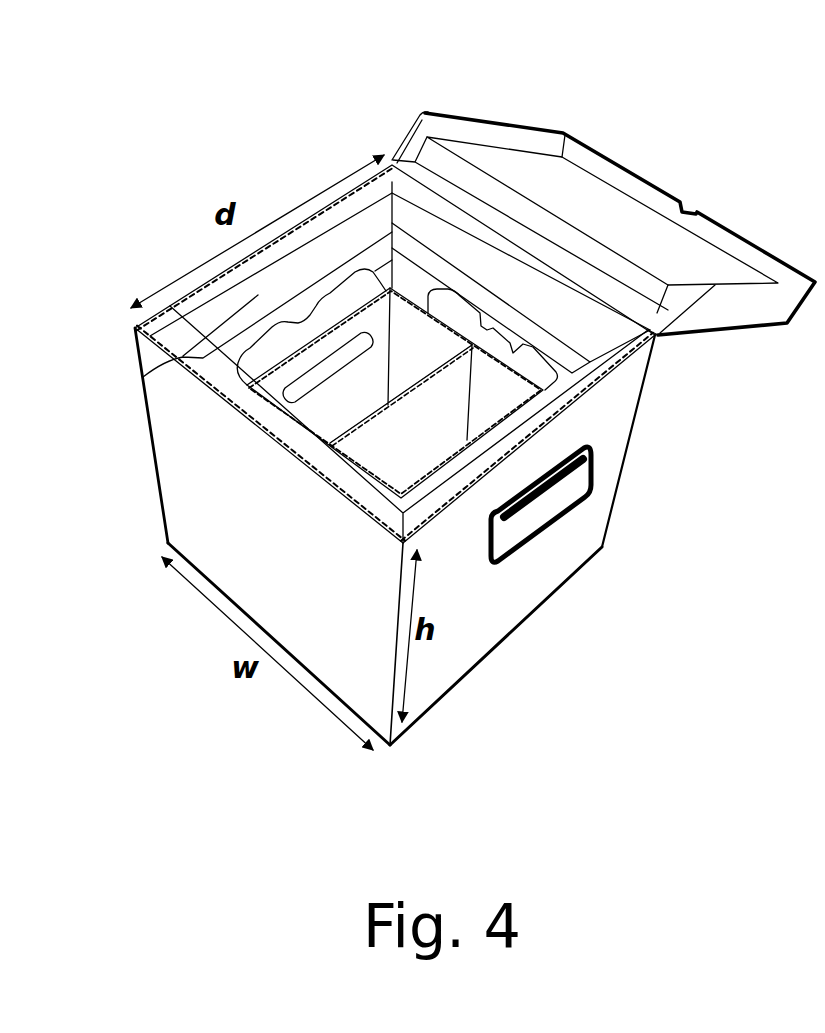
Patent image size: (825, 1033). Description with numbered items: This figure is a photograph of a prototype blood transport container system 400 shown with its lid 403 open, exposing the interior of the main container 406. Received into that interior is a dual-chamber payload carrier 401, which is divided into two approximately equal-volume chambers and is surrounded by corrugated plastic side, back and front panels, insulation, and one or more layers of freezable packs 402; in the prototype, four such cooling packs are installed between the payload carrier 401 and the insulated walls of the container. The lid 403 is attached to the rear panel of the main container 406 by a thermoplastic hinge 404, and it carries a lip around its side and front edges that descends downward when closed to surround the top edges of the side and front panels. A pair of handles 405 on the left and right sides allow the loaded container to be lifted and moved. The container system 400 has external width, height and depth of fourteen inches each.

The blood transport container system 400 is at (440, 68).
The dual-chamber payload carrier 401 is at (402, 427).
The freezable packs 402 is at (422, 238).
The lid 403 is at (590, 228).
The thermoplastic hinge 404 is at (665, 342).
The handles 405 is at (560, 520).
The main container 406 is at (283, 571).